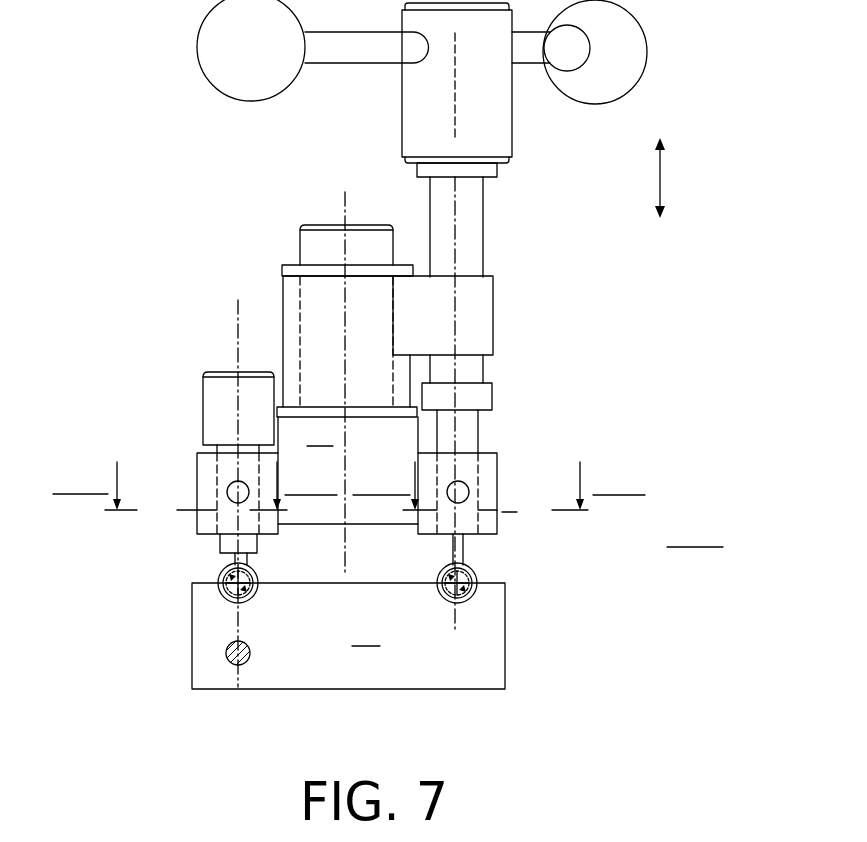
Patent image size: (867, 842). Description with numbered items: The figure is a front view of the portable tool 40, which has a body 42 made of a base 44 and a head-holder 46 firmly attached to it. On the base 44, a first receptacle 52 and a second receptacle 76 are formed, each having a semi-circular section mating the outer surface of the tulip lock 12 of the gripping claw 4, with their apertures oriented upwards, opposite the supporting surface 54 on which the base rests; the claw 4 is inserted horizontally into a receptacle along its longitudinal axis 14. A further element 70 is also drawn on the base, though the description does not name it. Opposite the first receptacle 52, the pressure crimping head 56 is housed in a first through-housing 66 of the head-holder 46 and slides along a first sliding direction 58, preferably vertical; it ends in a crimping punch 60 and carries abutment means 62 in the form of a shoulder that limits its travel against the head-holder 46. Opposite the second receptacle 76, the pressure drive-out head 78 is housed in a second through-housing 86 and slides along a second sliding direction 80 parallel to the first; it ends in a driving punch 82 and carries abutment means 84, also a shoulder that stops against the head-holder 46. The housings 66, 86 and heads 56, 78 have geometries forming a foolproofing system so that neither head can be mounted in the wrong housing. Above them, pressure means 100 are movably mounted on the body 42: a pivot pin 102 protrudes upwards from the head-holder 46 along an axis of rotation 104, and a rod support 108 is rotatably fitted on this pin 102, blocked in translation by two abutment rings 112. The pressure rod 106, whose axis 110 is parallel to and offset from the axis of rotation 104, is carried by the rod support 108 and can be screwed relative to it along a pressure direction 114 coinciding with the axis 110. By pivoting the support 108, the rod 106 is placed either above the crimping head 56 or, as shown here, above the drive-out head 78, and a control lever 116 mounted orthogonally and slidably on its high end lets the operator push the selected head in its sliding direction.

The tool 40 is at (160, 180).
The control lever 116 is at (333, 40).
The axis of the pressure rod 110 is at (457, 88).
The pressure direction 114 is at (660, 176).
The pressure means 100 is at (500, 199).
The axis of rotation 104 is at (342, 205).
The pivot pin 102 is at (318, 235).
The pressure rod 106 is at (470, 230).
The rod support 108 is at (318, 287).
The abutment rings 112 is at (283, 272).
The pressure drive-out head 78 is at (493, 320).
The first sliding direction 58 is at (237, 355).
The pressure crimping head 56 is at (270, 412).
The abutment means 84 is at (472, 420).
The abutment means 62 is at (200, 450).
The second sliding direction 80 is at (462, 466).
The first through-housing 66 is at (222, 475).
The second through-housing 86 is at (472, 504).
The crimping punch 60 is at (223, 553).
The driving punch 82 is at (466, 556).
The tulip lock 12 is at (227, 568).
The longitudinal axis 14 is at (258, 570).
The first receptacle 52 is at (258, 590).
The gripping claw 4 is at (232, 606).
The base 44 is at (348, 636).
The head-holder 46 is at (334, 331).
The second receptacle 76 is at (450, 602).
The pin 70 is at (247, 665).
The body 42 is at (317, 676).
The supporting surface 54 is at (472, 692).